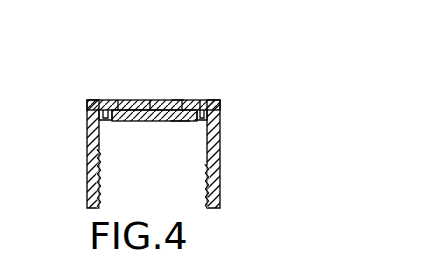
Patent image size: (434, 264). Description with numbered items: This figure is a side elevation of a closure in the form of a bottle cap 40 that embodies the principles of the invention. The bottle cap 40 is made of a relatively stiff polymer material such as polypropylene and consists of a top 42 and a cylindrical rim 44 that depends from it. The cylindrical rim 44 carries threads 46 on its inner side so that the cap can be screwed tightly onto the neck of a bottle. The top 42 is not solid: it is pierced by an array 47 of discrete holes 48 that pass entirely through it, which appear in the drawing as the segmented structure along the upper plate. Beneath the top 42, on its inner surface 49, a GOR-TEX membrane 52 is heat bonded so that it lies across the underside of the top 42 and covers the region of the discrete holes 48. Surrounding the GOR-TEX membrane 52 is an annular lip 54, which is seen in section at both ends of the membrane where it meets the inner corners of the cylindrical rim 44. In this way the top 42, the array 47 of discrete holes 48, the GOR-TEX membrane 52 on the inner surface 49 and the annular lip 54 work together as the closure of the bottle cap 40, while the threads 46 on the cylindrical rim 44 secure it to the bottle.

The bottle cap 40 is at (86, 153).
The top 42 is at (111, 99).
The cylindrical rim 44 is at (220, 156).
The threads 46 is at (100, 168).
The array 47 is at (179, 99).
The discrete holes 48 is at (128, 99).
The inner surface 49 is at (178, 121).
The GOR-TEX membrane 52 is at (145, 122).
The annular lip 54 is at (103, 99).